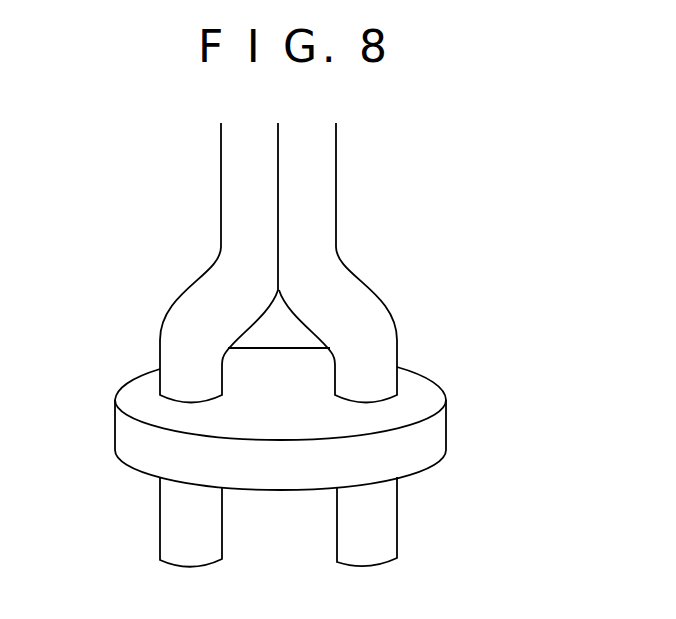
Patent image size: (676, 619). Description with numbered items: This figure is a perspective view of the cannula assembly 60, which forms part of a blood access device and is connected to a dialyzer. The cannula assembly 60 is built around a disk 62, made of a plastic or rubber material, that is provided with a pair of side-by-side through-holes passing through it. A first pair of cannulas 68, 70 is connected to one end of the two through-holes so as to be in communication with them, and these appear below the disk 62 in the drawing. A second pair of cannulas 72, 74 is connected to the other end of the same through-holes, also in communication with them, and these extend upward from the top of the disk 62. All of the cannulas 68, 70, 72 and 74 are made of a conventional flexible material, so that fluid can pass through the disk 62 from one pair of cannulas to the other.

The cannula assembly 60 is at (112, 324).
The disk 62 is at (446, 412).
The cannula 68 is at (160, 522).
The cannula 70 is at (397, 508).
The cannula 72 is at (221, 170).
The cannula 74 is at (335, 168).